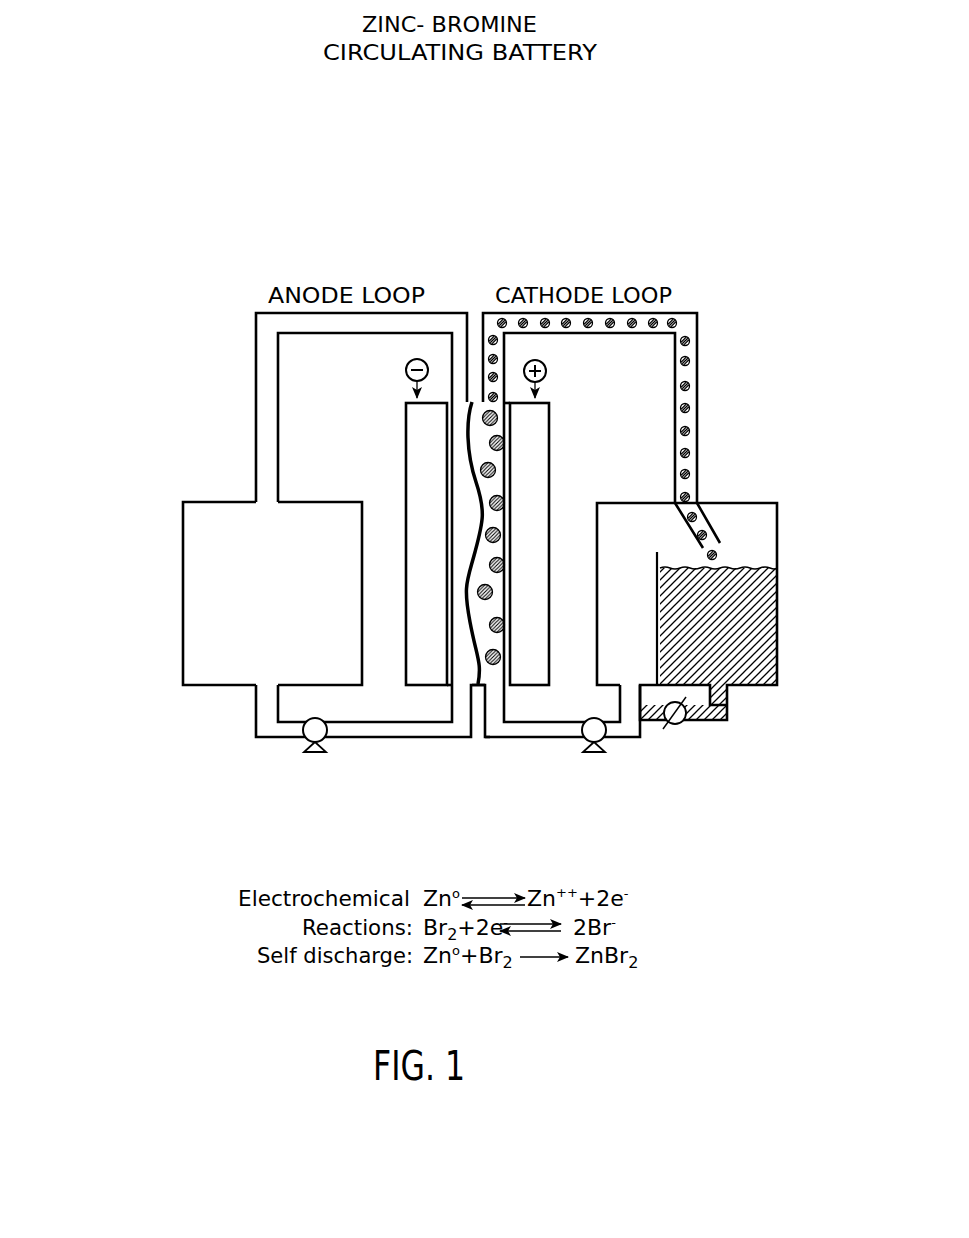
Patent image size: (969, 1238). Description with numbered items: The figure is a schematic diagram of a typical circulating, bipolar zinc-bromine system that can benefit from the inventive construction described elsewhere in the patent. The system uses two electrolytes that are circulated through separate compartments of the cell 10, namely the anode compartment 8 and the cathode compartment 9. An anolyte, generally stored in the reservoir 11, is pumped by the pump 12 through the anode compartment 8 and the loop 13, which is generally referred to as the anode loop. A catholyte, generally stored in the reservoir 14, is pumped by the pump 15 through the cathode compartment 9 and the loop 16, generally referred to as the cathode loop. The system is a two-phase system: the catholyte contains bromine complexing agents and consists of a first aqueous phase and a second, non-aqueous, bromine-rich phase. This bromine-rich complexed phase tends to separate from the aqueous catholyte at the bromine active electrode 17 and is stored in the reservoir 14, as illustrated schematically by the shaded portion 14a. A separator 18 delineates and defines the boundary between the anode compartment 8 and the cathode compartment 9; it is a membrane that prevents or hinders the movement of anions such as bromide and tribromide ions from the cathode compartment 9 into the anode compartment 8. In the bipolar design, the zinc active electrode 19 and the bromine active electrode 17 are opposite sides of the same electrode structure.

The anode compartment 8 is at (352, 822).
The cathode compartment 9 is at (532, 538).
The cell 10 is at (687, 522).
The reservoir 11 is at (276, 598).
The pump 12 is at (313, 752).
The loop 13 is at (260, 365).
The reservoir 14 is at (689, 628).
The shaded portion 14a is at (760, 617).
The pump 15 is at (594, 752).
The loop 16 is at (697, 326).
The bromine active electrode 17 is at (531, 453).
The separator 18 is at (480, 550).
The zinc active electrode 19 is at (403, 490).